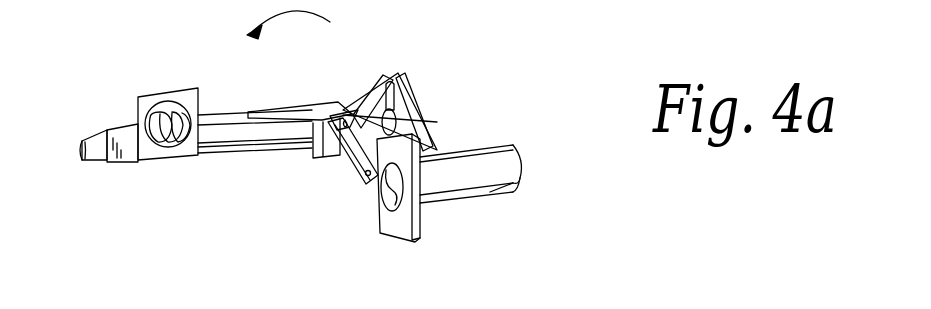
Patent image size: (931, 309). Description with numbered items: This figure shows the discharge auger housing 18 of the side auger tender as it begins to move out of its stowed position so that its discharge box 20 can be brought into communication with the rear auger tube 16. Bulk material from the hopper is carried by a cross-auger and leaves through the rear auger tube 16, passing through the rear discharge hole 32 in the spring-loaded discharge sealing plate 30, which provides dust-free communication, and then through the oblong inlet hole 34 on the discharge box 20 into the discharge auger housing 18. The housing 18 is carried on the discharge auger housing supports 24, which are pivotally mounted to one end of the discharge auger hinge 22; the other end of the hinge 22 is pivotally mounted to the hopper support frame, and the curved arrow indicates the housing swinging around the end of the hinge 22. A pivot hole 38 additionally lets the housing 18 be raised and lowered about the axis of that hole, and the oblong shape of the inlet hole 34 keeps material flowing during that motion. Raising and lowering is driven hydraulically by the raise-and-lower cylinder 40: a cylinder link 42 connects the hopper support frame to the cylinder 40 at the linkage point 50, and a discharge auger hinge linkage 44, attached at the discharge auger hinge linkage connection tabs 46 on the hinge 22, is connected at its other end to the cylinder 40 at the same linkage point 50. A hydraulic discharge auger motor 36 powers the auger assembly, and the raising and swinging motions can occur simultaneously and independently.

The rear auger tube 16 is at (502, 197).
The discharge auger housing 18 is at (220, 125).
The discharge box 20 is at (182, 90).
The discharge auger hinge 22 is at (342, 168).
The discharge auger housing supports 24 is at (273, 157).
The discharge sealing plate 30 is at (397, 233).
The rear discharge hole 32 is at (377, 223).
The oblong inlet hole 34 is at (157, 125).
The hydraulic discharge auger motor 36 is at (97, 153).
The pivot hole 38 is at (365, 183).
The raise-and-lower cylinder 40 is at (430, 118).
The cylinder link 42 is at (412, 100).
The discharge auger hinge linkage 44 is at (395, 73).
The discharge auger hinge linkage connection tabs 46 is at (333, 110).
The linkage point 50 is at (390, 110).